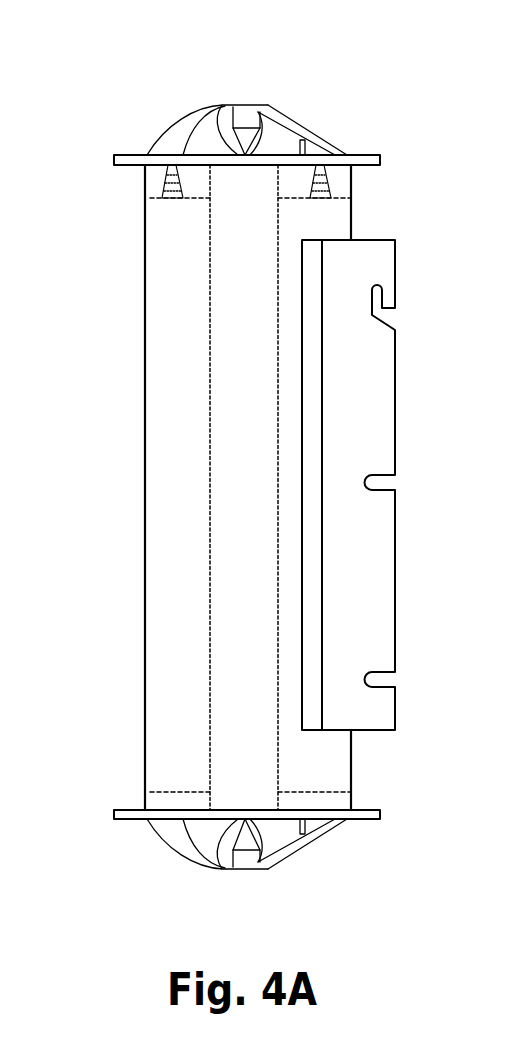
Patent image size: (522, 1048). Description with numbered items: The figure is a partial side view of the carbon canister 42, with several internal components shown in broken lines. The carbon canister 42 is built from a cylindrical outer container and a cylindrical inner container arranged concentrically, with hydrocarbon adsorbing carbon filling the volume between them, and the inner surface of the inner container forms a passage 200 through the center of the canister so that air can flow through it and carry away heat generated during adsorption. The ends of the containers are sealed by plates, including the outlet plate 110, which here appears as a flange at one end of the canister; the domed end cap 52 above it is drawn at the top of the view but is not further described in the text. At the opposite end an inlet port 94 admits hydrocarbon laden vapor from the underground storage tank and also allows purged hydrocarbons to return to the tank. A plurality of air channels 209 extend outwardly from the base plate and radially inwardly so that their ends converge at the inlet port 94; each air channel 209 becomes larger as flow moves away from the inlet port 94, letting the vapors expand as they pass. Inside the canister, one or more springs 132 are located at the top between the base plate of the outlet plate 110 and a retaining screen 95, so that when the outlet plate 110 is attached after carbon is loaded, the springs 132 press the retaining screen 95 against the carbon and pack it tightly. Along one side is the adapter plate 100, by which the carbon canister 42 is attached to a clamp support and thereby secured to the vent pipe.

The carbon canister 42 is at (112, 470).
The upper end cap 52 is at (247, 100).
The inlet port 94 is at (250, 875).
The retaining screen 95 is at (157, 198).
The adapter plate 100 is at (368, 423).
The outlet plate 110 is at (128, 110).
The springs 132 is at (332, 185).
The passage 200 is at (246, 830).
The air channels 209 is at (311, 128).